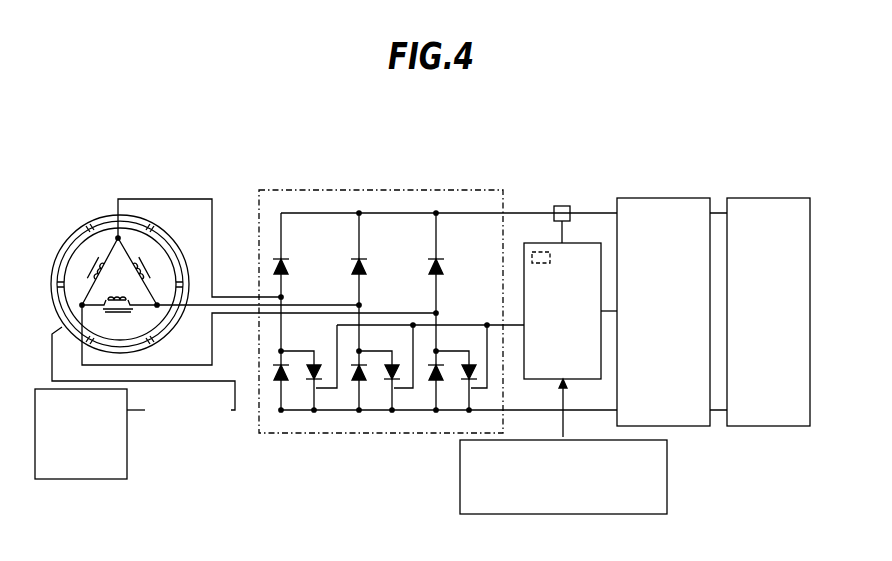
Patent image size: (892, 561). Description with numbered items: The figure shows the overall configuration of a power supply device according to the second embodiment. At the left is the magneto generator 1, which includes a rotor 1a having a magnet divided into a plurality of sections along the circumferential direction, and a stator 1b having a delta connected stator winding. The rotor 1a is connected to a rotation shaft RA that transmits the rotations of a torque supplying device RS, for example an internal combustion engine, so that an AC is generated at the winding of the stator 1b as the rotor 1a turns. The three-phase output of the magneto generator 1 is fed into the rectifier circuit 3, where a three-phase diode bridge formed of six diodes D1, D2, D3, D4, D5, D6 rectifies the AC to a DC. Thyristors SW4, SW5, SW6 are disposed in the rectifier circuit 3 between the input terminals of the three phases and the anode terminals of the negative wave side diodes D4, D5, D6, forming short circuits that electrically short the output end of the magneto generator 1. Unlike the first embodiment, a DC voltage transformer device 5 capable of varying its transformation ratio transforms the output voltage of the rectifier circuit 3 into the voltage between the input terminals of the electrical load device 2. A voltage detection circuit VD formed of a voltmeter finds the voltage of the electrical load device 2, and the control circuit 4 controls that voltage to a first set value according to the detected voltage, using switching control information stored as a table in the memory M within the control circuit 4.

The magneto generator 1 is at (148, 164).
The rotor 1a is at (79, 228).
The stator 1b is at (124, 243).
The electrical load device 2 is at (786, 198).
The rectifier circuit 3 is at (470, 190).
The control circuit 4 is at (586, 243).
The DC voltage transformer device 5 is at (681, 198).
The voltage detection circuit VD is at (562, 206).
The memory M is at (540, 252).
The torque supplying device RS is at (68, 479).
The rotation shaft RA is at (479, 339).
The diode D1 is at (284, 270).
The diode D2 is at (362, 270).
The diode D3 is at (439, 270).
The diode D4 is at (284, 376).
The diode D5 is at (362, 376).
The diode D6 is at (439, 376).
The thyristor SW4 is at (318, 364).
The thyristor SW5 is at (396, 364).
The thyristor SW6 is at (473, 364).